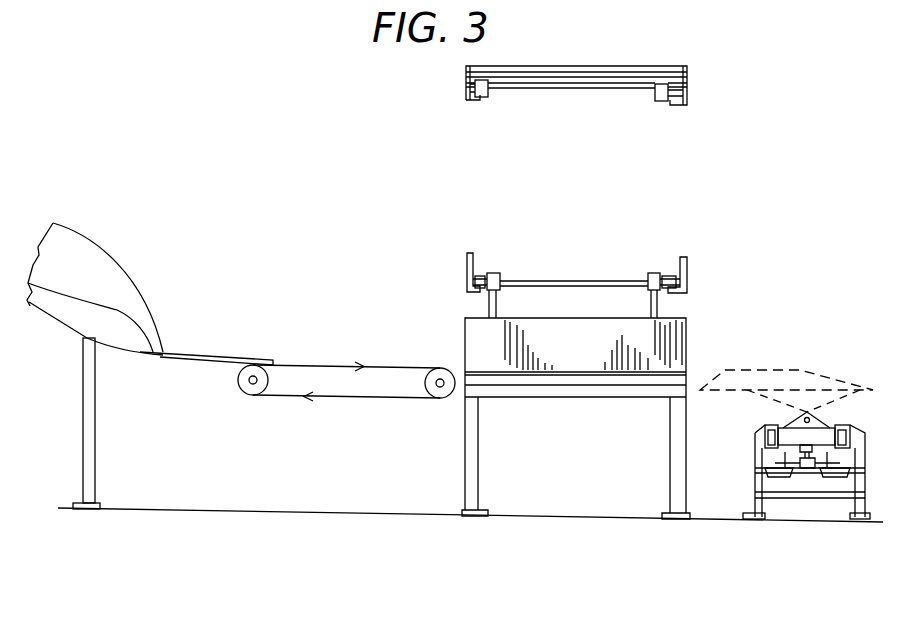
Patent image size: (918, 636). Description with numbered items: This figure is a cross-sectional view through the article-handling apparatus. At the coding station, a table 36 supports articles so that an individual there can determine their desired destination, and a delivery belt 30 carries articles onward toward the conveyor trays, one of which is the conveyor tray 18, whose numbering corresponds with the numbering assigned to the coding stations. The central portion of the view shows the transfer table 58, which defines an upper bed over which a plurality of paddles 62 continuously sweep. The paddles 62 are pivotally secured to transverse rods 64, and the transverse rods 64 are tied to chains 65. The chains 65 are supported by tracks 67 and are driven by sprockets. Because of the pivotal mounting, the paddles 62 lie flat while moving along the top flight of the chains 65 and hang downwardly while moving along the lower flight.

The conveyor tray 18 is at (770, 372).
The delivery belt 30 is at (373, 400).
The table 36 is at (187, 353).
The transfer table 58 is at (590, 392).
The paddle 62 is at (475, 337).
The transverse rod 64 is at (576, 280).
The chain 65 is at (488, 276).
The track 67 is at (467, 283).